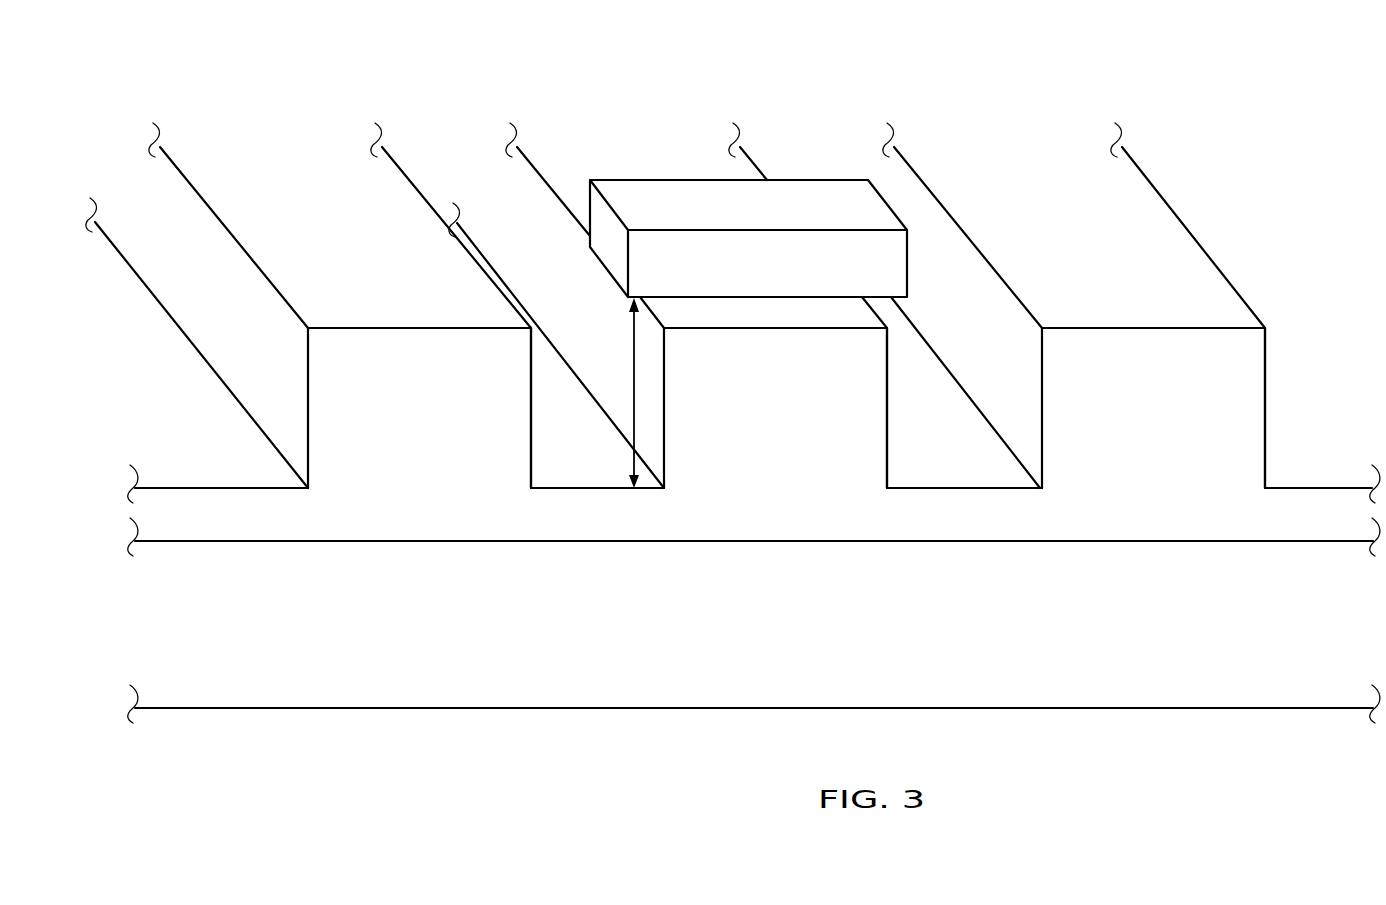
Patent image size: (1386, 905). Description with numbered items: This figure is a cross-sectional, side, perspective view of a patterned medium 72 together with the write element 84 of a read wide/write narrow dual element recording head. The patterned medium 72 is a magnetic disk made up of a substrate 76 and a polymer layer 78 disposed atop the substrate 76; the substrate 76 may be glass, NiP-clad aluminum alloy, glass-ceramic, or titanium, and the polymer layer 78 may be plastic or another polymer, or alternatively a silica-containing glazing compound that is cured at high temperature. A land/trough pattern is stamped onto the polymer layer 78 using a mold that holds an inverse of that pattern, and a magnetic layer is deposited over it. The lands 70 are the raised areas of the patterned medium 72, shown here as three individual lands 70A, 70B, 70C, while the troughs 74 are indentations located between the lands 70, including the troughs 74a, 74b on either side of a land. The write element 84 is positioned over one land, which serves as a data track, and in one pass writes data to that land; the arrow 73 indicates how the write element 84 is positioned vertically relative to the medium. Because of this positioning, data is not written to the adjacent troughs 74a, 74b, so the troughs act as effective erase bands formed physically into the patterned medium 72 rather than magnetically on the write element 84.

The lands 70 is at (428, 412).
The land 70A is at (877, 406).
The land 70B is at (1257, 409).
The land 70C is at (517, 405).
The patterned medium 72 is at (1202, 98).
The arrow 73 is at (632, 337).
The troughs 74 is at (212, 453).
The trough 74a is at (588, 472).
The trough 74b is at (970, 473).
The substrate 76 is at (165, 644).
The polymer layer 78 is at (165, 516).
The write element 84 is at (905, 265).